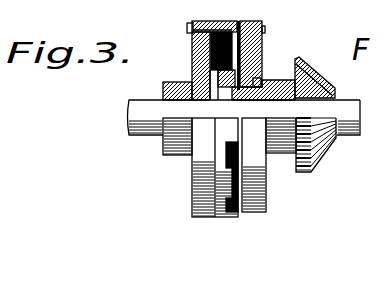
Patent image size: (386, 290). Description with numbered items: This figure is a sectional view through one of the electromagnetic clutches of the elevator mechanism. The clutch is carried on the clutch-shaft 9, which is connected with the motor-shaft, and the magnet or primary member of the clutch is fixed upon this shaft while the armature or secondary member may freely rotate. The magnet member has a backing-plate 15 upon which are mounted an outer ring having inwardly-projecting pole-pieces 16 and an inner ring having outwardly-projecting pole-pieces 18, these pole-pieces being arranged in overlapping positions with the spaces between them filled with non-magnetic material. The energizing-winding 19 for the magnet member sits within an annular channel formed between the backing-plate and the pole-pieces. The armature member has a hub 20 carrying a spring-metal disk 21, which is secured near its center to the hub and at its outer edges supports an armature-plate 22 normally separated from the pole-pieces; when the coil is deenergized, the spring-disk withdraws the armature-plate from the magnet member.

The clutch-shaft 9 is at (375, 110).
The backing-plate 15 is at (197, 60).
The inwardly-projecting pole-pieces 16 is at (231, 50).
The outwardly-projecting pole-pieces 18 is at (228, 77).
The energizing-winding 19 is at (227, 23).
The hub 20 is at (280, 85).
The spring-metal disk 21 is at (264, 36).
The armature-plate 22 is at (252, 23).